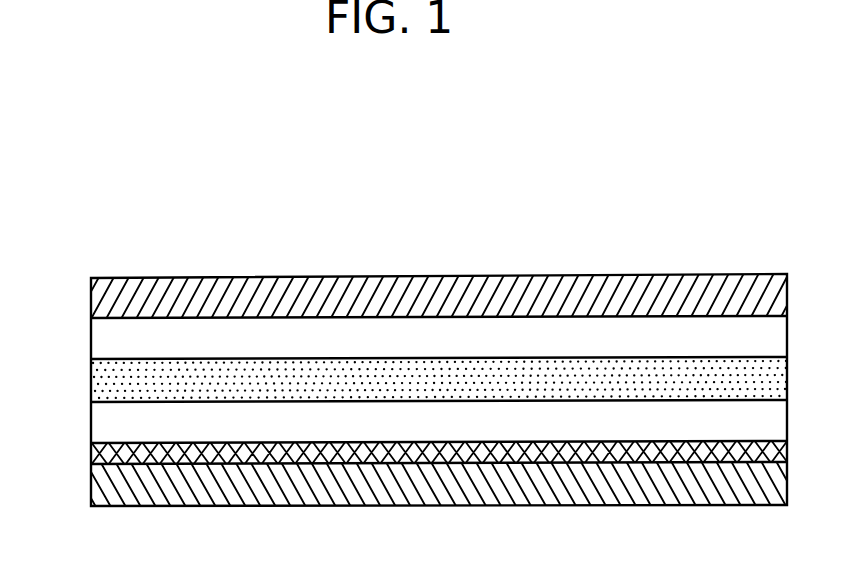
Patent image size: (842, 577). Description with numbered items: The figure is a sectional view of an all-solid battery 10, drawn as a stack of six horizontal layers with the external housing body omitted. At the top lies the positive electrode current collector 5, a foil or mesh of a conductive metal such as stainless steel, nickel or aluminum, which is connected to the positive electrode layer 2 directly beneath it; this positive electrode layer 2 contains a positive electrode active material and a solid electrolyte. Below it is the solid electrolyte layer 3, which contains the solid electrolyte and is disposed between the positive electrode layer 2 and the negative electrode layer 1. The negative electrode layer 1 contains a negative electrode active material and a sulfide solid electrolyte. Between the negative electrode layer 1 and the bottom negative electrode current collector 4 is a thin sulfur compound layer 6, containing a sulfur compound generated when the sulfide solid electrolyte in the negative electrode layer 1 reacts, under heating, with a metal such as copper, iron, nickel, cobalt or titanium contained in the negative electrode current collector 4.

The all-solid battery 10 is at (441, 209).
The positive electrode current collector 5 is at (106, 292).
The positive electrode layer 2 is at (108, 337).
The solid electrolyte layer 3 is at (106, 377).
The negative electrode layer 1 is at (108, 422).
The sulfur compound layer 6 is at (106, 453).
The negative electrode current collector 4 is at (106, 488).